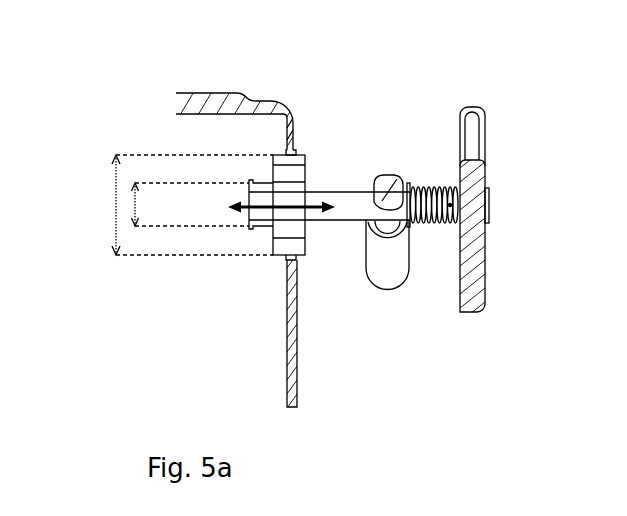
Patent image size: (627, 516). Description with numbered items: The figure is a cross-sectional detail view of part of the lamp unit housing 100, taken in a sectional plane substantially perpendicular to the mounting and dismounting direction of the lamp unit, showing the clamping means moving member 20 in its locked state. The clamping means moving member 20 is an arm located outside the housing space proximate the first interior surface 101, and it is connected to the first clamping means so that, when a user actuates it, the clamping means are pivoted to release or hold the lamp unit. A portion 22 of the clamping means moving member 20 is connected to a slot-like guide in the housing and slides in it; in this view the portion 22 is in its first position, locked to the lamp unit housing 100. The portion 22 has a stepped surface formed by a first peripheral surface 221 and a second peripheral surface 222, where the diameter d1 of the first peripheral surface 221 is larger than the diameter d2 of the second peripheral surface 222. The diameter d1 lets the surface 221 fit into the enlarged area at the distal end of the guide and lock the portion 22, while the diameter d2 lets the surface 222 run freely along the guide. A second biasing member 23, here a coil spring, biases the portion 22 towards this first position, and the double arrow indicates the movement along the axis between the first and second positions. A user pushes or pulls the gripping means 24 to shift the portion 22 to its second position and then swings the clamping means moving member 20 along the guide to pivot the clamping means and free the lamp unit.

The lamp unit housing 100 is at (248, 78).
The first interior surface 101 is at (278, 398).
The clamping means moving member 20 is at (490, 270).
The portion of the clamping means moving member 22 is at (306, 176).
The first peripheral surface 221 is at (295, 153).
The second peripheral surface 222 is at (265, 225).
The second biasing member 23 is at (430, 172).
The gripping means 24 is at (390, 253).
The diameter of the first peripheral surface d1 is at (116, 203).
The diameter of the second peripheral surface d2 is at (135, 205).